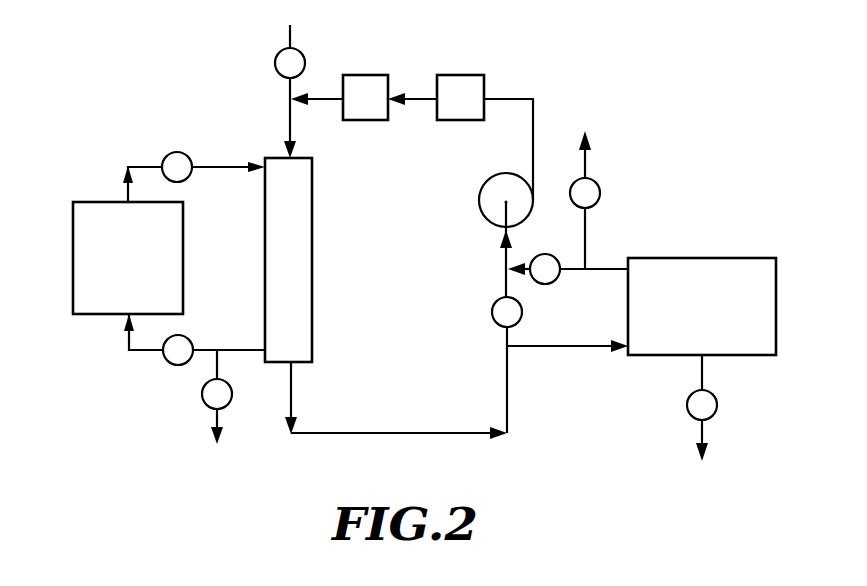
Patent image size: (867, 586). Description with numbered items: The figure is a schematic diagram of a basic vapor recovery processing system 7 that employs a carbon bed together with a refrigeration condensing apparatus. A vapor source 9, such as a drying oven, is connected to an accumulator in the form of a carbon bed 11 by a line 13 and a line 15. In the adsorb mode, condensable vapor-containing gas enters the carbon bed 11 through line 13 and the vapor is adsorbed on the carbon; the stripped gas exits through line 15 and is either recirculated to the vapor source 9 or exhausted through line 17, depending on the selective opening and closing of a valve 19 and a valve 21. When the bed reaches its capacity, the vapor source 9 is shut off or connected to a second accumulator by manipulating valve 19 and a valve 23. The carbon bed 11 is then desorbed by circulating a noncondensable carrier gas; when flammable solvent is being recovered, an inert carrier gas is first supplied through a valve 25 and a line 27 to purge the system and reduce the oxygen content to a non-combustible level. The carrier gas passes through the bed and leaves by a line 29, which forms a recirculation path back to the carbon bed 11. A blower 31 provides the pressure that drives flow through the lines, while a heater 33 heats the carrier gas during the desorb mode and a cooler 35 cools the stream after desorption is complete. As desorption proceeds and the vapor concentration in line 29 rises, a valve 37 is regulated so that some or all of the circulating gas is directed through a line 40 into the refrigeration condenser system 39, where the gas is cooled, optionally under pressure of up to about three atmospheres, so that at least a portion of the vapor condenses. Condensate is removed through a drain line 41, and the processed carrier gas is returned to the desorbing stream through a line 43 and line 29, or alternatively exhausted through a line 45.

The processing system 7 is at (210, 88).
The vapor source 9 is at (93, 201).
The carbon bed 11 is at (313, 198).
The line 13 is at (138, 166).
The line 15 is at (234, 349).
The line 17 is at (222, 418).
The valve 19 is at (178, 366).
The valve 21 is at (233, 392).
The valve 23 is at (183, 152).
The valve 25 is at (278, 51).
The line 27 is at (288, 120).
The line 29 is at (415, 96).
The blower 31 is at (478, 200).
The heater 33 is at (468, 75).
The cooler 35 is at (363, 75).
The valve 37 is at (492, 317).
The refrigeration condenser system 39 is at (713, 259).
The line 40 is at (563, 348).
The drain line 41 is at (704, 375).
The line 43 is at (603, 273).
The line 45 is at (587, 226).